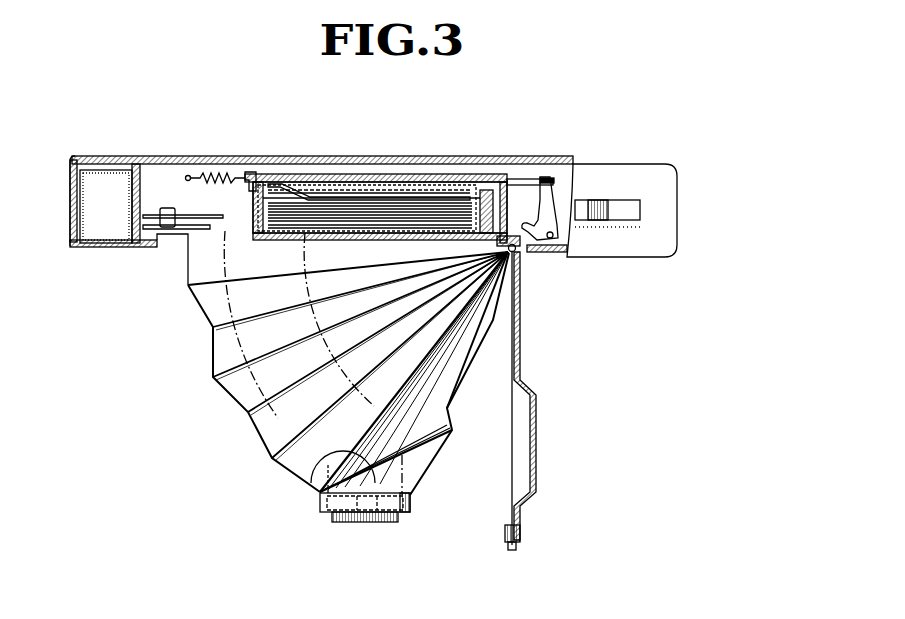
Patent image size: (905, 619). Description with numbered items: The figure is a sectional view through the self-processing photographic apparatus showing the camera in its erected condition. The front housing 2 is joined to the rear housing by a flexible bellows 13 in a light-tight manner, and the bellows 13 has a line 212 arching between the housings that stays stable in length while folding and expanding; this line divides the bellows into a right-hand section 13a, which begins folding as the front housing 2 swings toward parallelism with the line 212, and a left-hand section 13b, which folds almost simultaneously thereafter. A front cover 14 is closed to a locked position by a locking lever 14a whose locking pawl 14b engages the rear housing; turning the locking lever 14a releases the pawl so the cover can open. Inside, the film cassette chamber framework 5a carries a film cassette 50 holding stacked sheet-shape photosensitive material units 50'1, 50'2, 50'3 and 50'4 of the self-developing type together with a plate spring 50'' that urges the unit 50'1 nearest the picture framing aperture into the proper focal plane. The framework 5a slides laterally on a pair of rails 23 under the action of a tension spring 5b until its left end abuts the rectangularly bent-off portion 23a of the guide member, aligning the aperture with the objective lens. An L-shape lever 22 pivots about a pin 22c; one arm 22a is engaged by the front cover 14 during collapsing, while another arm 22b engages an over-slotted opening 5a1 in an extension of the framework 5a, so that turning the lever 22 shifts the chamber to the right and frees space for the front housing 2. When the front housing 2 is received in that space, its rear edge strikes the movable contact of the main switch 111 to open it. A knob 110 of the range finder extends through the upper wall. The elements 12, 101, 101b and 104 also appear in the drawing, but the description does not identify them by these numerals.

The front housing 2 is at (318, 495).
The nozzle tip filter 12 is at (365, 522).
The flexible bellows 13 is at (348, 363).
The right-hand section 13a is at (443, 453).
The left-hand section 13b is at (262, 428).
The front cover 14 is at (537, 450).
The locking lever 14a is at (521, 533).
The locking pawl 14b is at (505, 533).
The L-shape lever 22 is at (547, 202).
The one arm 22a is at (514, 252).
The another arm 22b is at (541, 177).
The pin 22c is at (560, 252).
The rails 23 is at (257, 173).
The rectangularly bent-off portion 23a is at (247, 186).
The film cassette 50 is at (380, 176).
The sheet-shape photosensitive material unit 50'1 is at (363, 247).
The sheet-shape photosensitive material unit 50'2 is at (370, 174).
The sheet-shape photosensitive material unit 50'3 is at (369, 157).
The sheet-shape photosensitive material unit 50'4 is at (369, 161).
The plate spring 50'' is at (371, 162).
The film cassette chamber framework 5a is at (503, 188).
The over-slotted opening 5a1 is at (527, 178).
The tension spring 5b is at (224, 177).
The housing 101 is at (620, 247).
The guide plate 101b is at (170, 229).
The battery compartment 104 is at (104, 240).
The manually operable member or knob 110 is at (604, 200).
The main switch 111 is at (167, 208).
The line 212 is at (313, 458).